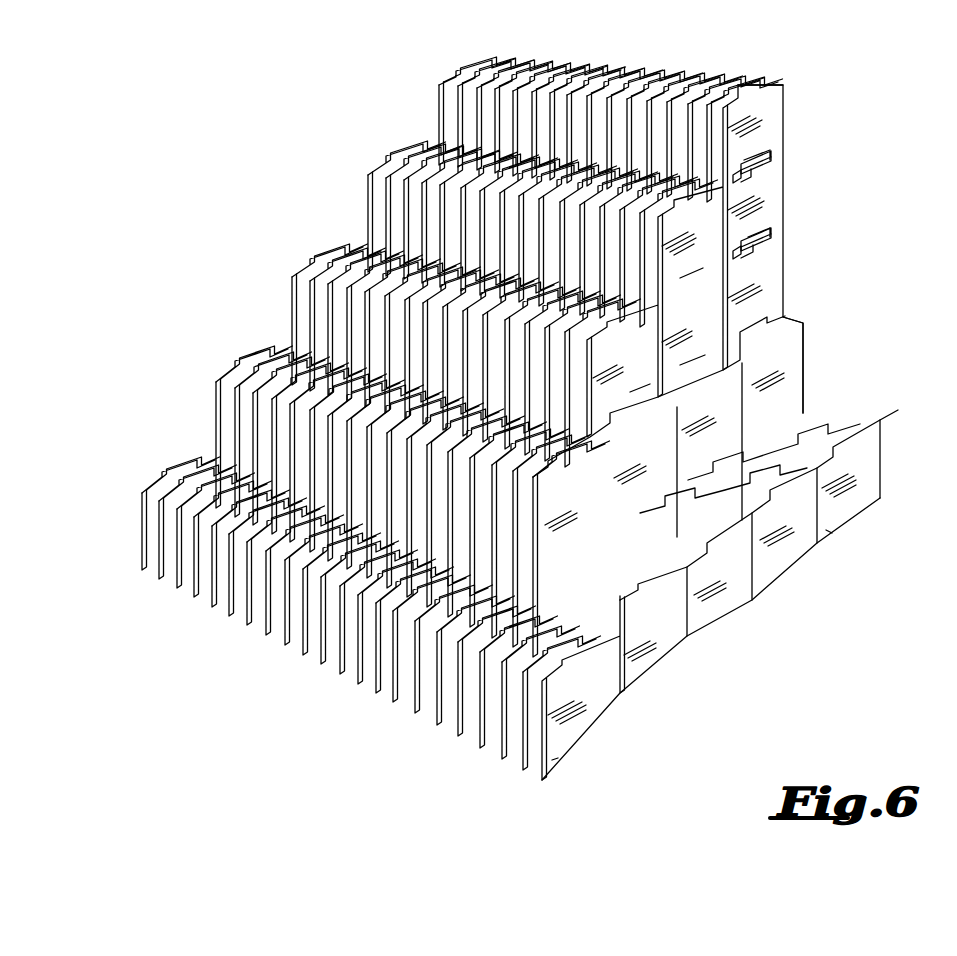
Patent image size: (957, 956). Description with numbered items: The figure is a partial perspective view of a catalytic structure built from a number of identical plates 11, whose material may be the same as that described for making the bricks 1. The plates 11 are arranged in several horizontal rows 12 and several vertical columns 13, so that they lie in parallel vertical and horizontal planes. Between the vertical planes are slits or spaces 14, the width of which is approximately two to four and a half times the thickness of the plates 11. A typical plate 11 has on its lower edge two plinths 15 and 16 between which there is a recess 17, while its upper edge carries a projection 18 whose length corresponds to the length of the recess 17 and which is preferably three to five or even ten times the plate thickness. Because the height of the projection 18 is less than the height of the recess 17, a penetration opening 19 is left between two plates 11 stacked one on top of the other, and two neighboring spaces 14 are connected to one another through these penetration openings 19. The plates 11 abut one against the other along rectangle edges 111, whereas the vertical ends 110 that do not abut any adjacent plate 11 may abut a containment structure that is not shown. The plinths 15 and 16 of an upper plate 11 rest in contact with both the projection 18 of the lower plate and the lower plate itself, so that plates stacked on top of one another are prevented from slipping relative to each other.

The brick 1 is at (693, 357).
The plate 11 is at (160, 533).
The horizontal row 12 is at (210, 642).
The vertical column 13 is at (325, 225).
The slit or space 14 is at (468, 118).
The plinth 15 is at (753, 170).
The plinth 16 is at (777, 157).
The recess 17 is at (760, 167).
The projection 18 is at (733, 180).
The penetration opening 19 is at (747, 160).
The vertical end 110 is at (825, 557).
The rectangle edge 111 is at (786, 94).